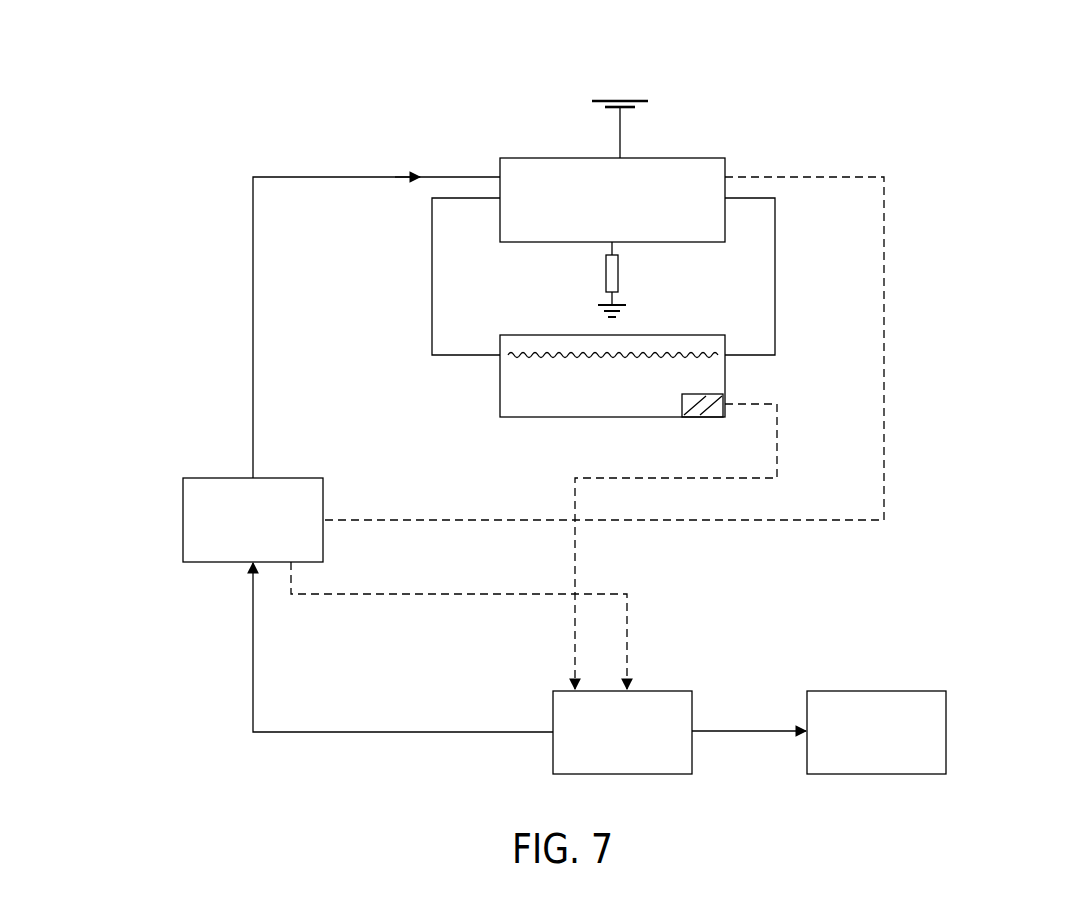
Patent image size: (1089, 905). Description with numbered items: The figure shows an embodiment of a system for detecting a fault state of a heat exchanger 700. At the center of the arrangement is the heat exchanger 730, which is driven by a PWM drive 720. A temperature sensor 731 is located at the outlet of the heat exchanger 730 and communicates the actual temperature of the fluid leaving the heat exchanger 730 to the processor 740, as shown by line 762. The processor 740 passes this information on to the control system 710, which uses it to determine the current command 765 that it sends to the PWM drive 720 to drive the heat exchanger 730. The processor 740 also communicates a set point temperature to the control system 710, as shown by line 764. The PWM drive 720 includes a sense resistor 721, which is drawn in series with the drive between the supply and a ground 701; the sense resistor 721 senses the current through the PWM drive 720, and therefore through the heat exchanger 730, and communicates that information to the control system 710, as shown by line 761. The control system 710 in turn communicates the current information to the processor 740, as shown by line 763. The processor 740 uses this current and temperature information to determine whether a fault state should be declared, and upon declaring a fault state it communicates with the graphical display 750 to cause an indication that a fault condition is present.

The system for detecting a fault state of a heat exchanger 700 is at (1010, 149).
The ground 701 is at (615, 304).
The control system 710 is at (183, 517).
The PWM drive 720 is at (703, 157).
The sense resistor 721 is at (640, 97).
The heat exchanger 730 is at (500, 381).
The temperature sensor 731 is at (724, 403).
The processor 740 is at (692, 746).
The graphical display 750 is at (947, 732).
The line 761 is at (886, 357).
The line 762 is at (779, 441).
The line 763 is at (385, 598).
The line 764 is at (253, 655).
The current command 765 is at (253, 329).